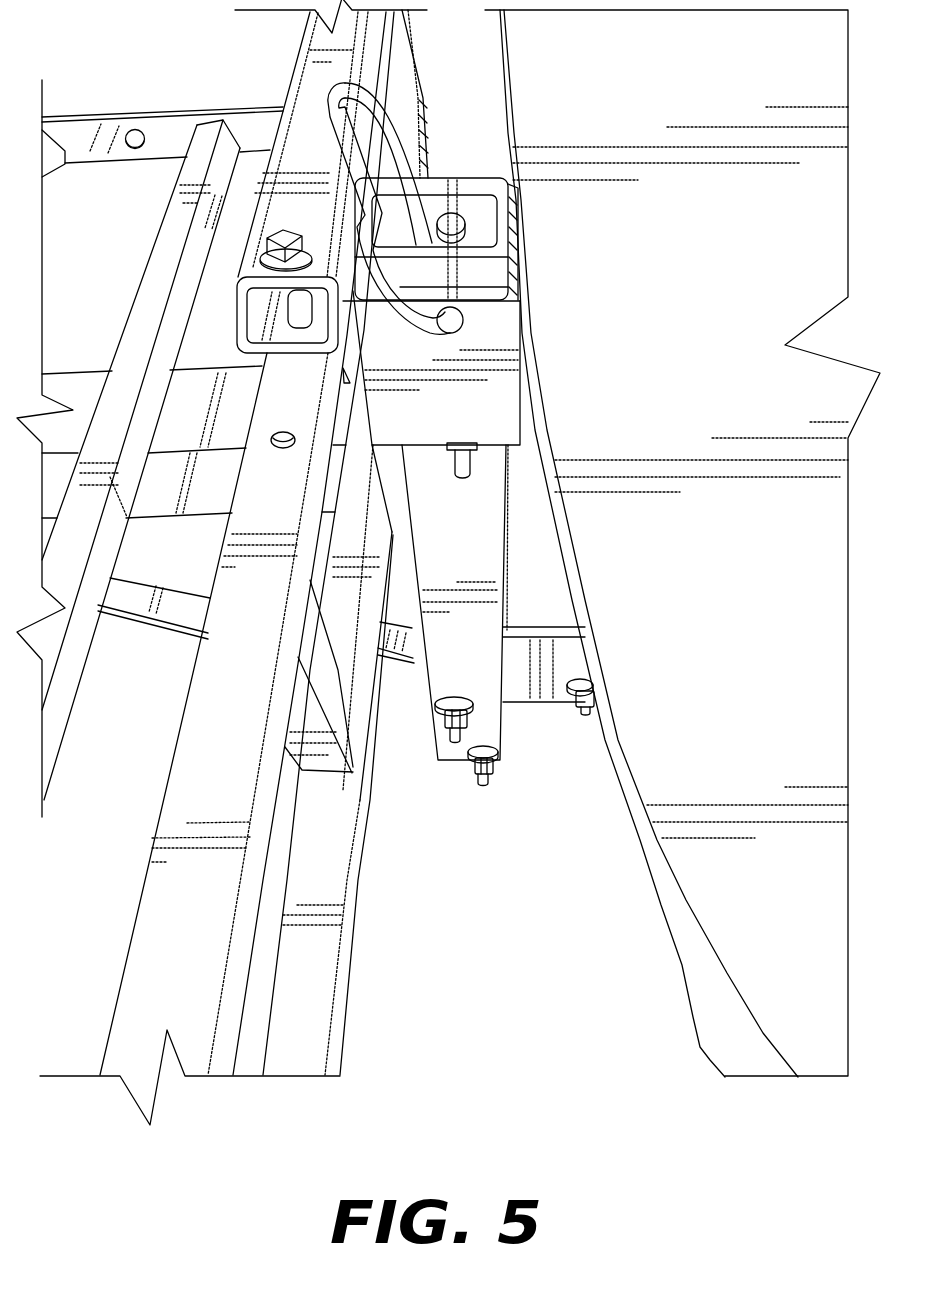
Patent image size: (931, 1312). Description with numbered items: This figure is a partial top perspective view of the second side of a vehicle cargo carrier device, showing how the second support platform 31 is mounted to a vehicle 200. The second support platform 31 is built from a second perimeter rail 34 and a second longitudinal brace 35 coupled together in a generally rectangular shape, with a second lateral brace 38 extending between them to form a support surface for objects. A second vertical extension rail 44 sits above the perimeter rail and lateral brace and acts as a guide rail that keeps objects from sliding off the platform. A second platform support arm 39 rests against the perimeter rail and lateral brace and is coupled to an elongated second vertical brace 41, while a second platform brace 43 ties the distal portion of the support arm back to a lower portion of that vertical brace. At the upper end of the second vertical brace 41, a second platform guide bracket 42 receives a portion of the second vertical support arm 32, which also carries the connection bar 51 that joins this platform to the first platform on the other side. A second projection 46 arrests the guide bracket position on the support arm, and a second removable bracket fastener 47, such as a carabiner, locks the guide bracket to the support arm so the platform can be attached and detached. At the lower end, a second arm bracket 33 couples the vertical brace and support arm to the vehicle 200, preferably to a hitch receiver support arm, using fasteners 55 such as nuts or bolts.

The second support platform 31 is at (103, 92).
The second vertical support arm 32 is at (487, 267).
The second arm bracket 33 is at (518, 673).
The second perimeter rail 34 is at (322, 990).
The second longitudinal brace 35 is at (183, 127).
The second lateral brace 38 is at (175, 255).
The second platform support arm 39 is at (92, 384).
The second vertical brace 41 is at (395, 477).
The second platform guide bracket 42 is at (485, 343).
The second platform brace 43 is at (180, 602).
The second vertical extension rail 44 is at (187, 807).
The second projection 46 is at (470, 472).
The second removable bracket fastener 47 is at (400, 175).
The connection bar 51 is at (310, 97).
The fastener 55 is at (592, 690).
The vehicle 200 is at (763, 847).